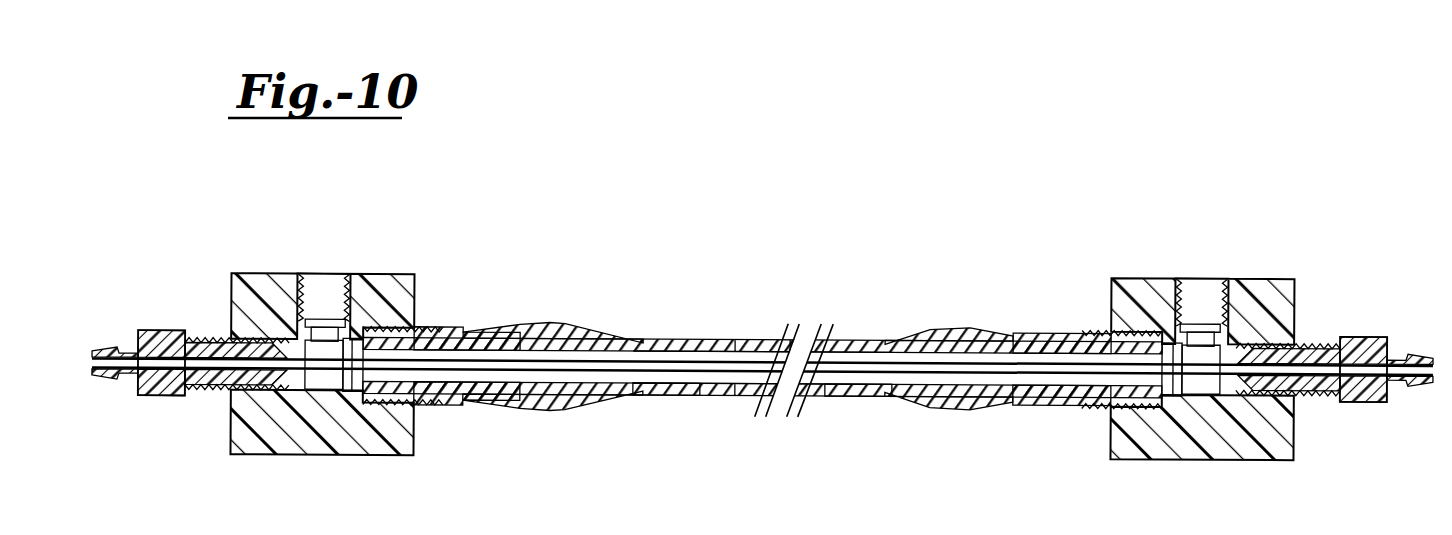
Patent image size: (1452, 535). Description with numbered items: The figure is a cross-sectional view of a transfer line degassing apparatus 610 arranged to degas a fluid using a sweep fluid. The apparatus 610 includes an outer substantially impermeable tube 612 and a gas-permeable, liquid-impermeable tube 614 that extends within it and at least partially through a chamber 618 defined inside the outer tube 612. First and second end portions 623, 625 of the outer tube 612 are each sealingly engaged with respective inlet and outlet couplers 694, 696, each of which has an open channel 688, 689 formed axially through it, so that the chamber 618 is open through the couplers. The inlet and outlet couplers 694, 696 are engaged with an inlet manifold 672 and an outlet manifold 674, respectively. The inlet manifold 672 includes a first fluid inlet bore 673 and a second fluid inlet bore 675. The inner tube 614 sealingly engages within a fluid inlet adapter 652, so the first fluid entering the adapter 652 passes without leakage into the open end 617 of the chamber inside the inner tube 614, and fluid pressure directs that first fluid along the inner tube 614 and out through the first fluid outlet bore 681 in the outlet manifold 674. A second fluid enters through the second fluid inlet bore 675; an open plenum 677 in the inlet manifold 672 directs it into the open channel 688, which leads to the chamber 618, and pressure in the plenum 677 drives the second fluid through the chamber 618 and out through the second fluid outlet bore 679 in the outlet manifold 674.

The apparatus 610 is at (772, 195).
The outer substantially impermeable tube 612 is at (656, 337).
The gas-permeable, liquid-impermeable tube 614 is at (700, 372).
The open end 617 is at (176, 394).
The chamber 618 is at (730, 353).
The first end portion 623 is at (548, 318).
The second end portion 625 is at (970, 318).
The fluid inlet adapter 652 is at (152, 394).
The inlet manifold 672 is at (250, 273).
The first fluid inlet bore 673 is at (231, 342).
The outlet manifold 674 is at (1247, 278).
The second fluid inlet bore 675 is at (341, 273).
The open plenum 677 is at (330, 381).
The second fluid outlet bore 679 is at (1182, 278).
The first fluid outlet bore 681 is at (1290, 346).
The open channel 688 is at (642, 390).
The open channel 689 is at (888, 382).
The inlet coupler 694 is at (452, 405).
The outlet coupler 696 is at (1085, 327).